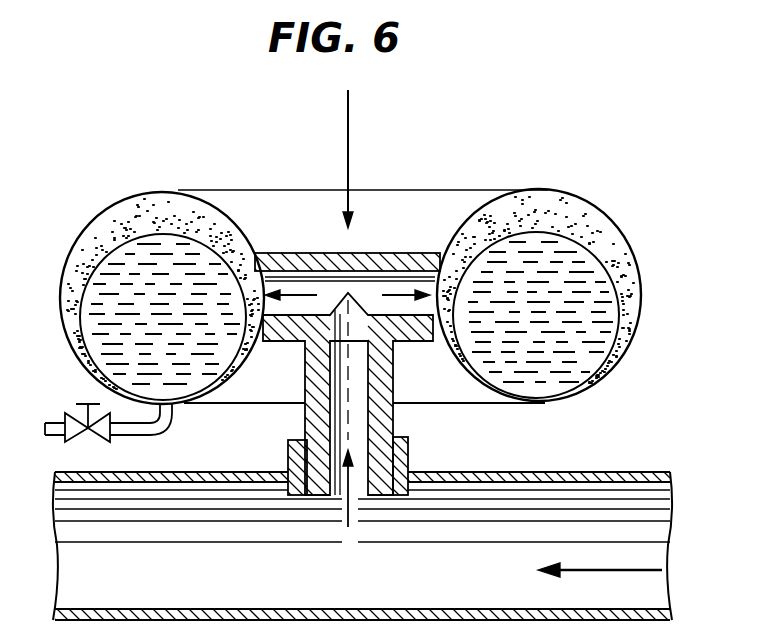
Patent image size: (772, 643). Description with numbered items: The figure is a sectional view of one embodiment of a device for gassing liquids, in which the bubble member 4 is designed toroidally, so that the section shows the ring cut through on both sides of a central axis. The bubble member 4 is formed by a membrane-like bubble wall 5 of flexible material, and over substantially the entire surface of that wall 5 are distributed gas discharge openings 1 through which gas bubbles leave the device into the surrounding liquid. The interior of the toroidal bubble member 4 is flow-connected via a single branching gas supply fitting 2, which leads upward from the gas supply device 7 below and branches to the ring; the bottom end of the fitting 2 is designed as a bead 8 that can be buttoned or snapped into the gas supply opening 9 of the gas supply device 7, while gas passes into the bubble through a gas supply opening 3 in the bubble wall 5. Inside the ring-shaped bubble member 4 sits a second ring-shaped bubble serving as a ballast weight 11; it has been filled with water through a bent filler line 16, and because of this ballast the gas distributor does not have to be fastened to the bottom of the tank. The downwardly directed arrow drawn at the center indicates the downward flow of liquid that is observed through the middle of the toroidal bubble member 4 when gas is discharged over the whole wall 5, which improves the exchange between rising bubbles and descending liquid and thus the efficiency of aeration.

The gas discharge openings 1 is at (179, 203).
The gas supply fitting 2 is at (395, 415).
The gas supply opening 3 is at (256, 256).
The bubble member 4 is at (123, 199).
The bubble wall 5 is at (599, 210).
The gas supply device 7 is at (523, 472).
The bead 8 is at (410, 458).
The gas supply opening 9 is at (302, 462).
The ballast weight 11 is at (603, 358).
The filler line 16 is at (176, 420).